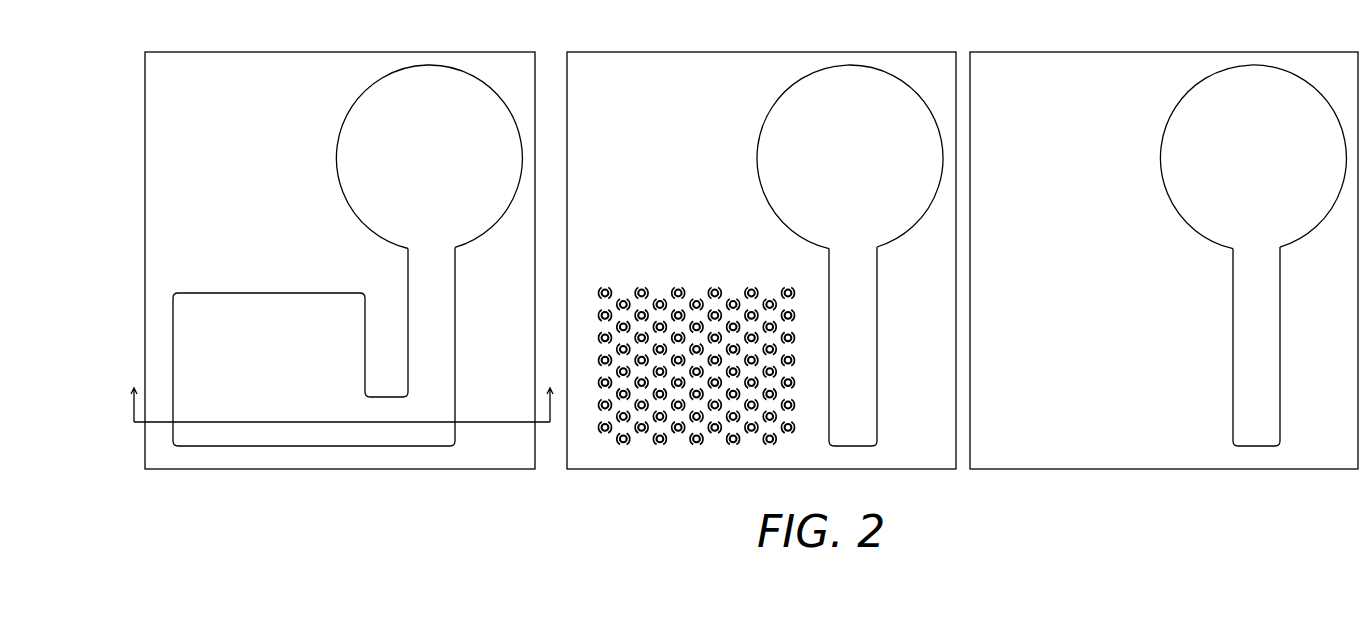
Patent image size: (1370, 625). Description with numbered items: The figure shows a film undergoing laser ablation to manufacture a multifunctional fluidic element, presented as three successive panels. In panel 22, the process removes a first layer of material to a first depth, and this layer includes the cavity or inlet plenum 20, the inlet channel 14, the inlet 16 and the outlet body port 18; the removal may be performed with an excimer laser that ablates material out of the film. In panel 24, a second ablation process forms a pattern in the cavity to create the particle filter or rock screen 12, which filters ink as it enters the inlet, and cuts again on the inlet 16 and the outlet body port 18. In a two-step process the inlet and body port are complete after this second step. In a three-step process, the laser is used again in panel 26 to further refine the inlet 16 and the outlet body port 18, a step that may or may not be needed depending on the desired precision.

The particle filter 12 is at (688, 293).
The inlet channel 14 is at (393, 430).
The inlet 16 is at (443, 387).
The outlet body port 18 is at (335, 160).
The inlet plenum 20 is at (248, 293).
The first panel 22 is at (398, 52).
The second panel 24 is at (760, 52).
The third panel 26 is at (1083, 52).